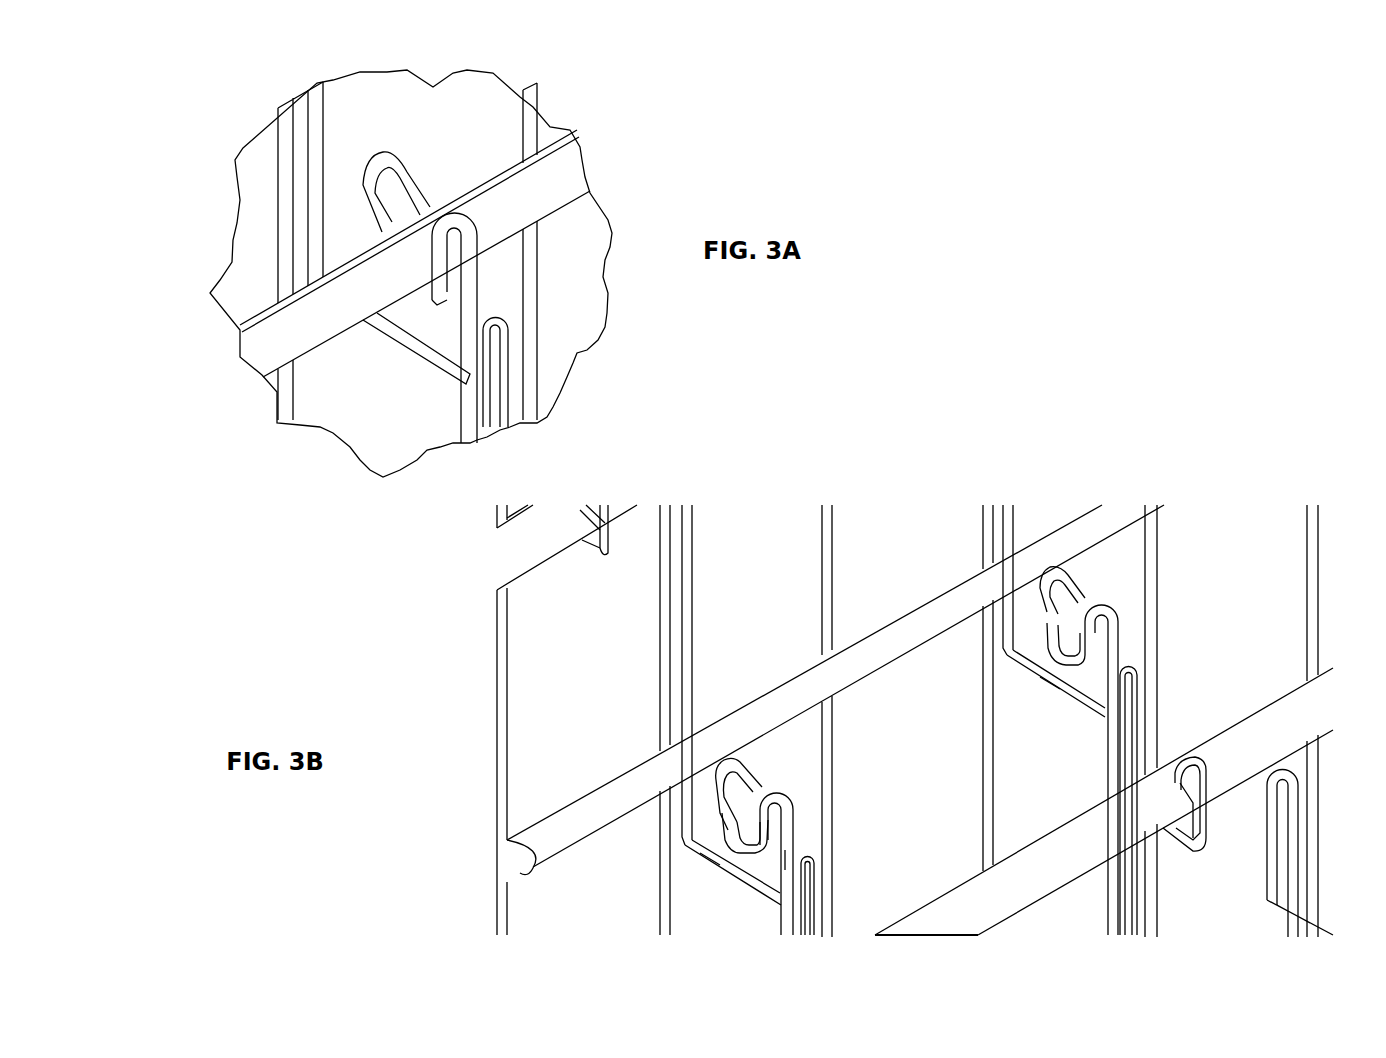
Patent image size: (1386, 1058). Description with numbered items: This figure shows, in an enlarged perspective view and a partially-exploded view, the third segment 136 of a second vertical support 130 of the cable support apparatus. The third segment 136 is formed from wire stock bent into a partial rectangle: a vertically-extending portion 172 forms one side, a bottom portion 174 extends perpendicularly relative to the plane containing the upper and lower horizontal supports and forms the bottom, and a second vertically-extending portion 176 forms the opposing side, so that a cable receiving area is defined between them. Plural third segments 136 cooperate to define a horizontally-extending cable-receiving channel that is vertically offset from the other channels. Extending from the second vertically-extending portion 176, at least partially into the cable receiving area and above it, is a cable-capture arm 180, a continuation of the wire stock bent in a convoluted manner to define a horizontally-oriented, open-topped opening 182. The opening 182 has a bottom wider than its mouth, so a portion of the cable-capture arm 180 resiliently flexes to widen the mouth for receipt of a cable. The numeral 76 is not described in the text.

In FIG. 3B, the panel 76 is at (787, 853).
In FIG. 3A, the second vertical support 130 is at (267, 432).
In FIG. 3B, the second vertical support 130 is at (975, 695).
In FIG. 3A, the third segment 136 is at (320, 120).
In FIG. 3B, the third segment 136 is at (702, 879).
In FIG. 3A, the vertically-extending portion 172 is at (323, 167).
In FIG. 3B, the vertically-extending portion 172 is at (685, 816).
In FIG. 3A, the bottom portion 174 is at (434, 365).
In FIG. 3B, the bottom portion 174 is at (727, 872).
In FIG. 3A, the second vertically-extending portion 176 is at (478, 307).
In FIG. 3B, the second vertically-extending portion 176 is at (1112, 643).
In FIG. 3A, the cable-capture arm 180 is at (443, 293).
In FIG. 3B, the cable-capture arm 180 is at (737, 813).
In FIG. 3A, the open-topped opening 182 is at (440, 207).
In FIG. 3B, the open-topped opening 182 is at (772, 783).